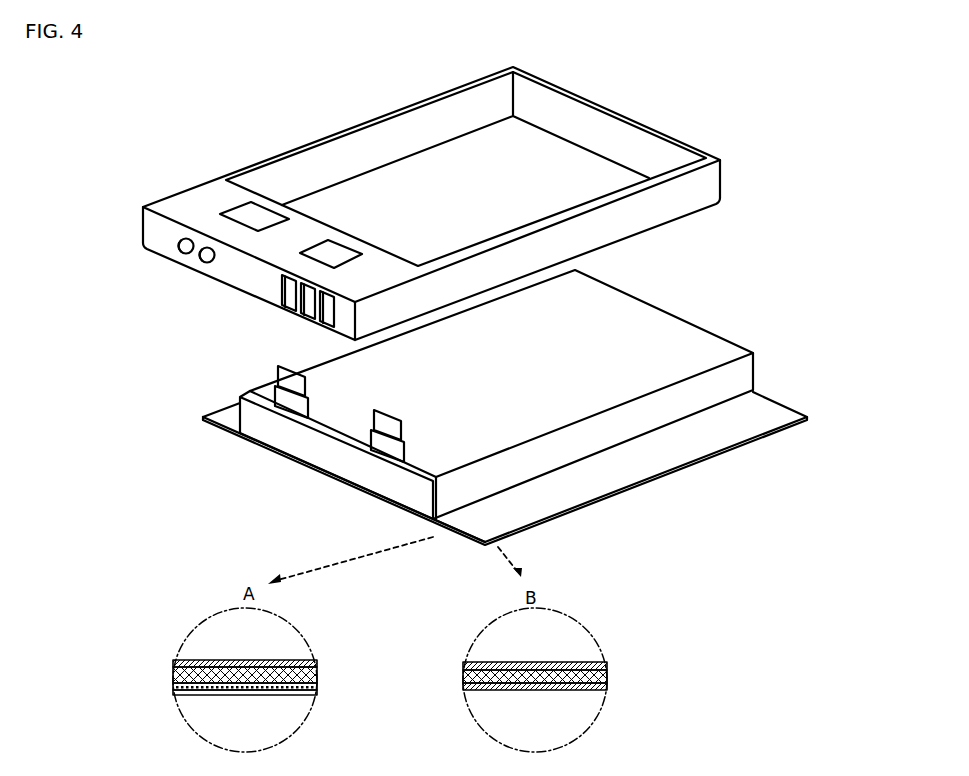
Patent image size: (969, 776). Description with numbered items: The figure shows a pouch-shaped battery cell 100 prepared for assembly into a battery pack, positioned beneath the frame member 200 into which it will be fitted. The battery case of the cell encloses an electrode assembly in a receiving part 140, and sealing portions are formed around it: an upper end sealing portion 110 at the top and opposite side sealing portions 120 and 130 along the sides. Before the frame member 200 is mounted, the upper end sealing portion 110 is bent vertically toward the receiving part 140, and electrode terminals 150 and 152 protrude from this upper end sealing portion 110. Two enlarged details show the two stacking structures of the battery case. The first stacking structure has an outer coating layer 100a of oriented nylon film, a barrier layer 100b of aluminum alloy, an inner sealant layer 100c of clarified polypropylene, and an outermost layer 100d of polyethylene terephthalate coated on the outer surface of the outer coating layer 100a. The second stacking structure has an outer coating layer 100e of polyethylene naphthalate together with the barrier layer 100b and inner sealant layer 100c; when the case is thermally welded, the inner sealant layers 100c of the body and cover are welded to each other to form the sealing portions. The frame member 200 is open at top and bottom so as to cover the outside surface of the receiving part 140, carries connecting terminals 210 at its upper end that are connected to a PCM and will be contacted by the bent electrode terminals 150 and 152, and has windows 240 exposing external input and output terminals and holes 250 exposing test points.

The pouch-shaped battery cell 100 is at (716, 279).
The outer coating layer 100a is at (318, 687).
The barrier layer 100b is at (318, 675).
The inner sealant layer 100c is at (318, 661).
The outermost layer 100d is at (318, 693).
The outer coating layer 100e is at (608, 687).
The upper end sealing portion 110 is at (288, 436).
The side sealing portion 120 is at (728, 440).
The side sealing portion 130 is at (232, 417).
The receiving part 140 is at (745, 375).
The electrode terminal 150 is at (388, 410).
The electrode terminal 152 is at (273, 386).
The frame member 200 is at (748, 170).
The connecting terminals 210 is at (237, 206).
The windows 240 is at (282, 281).
The holes 250 is at (179, 244).